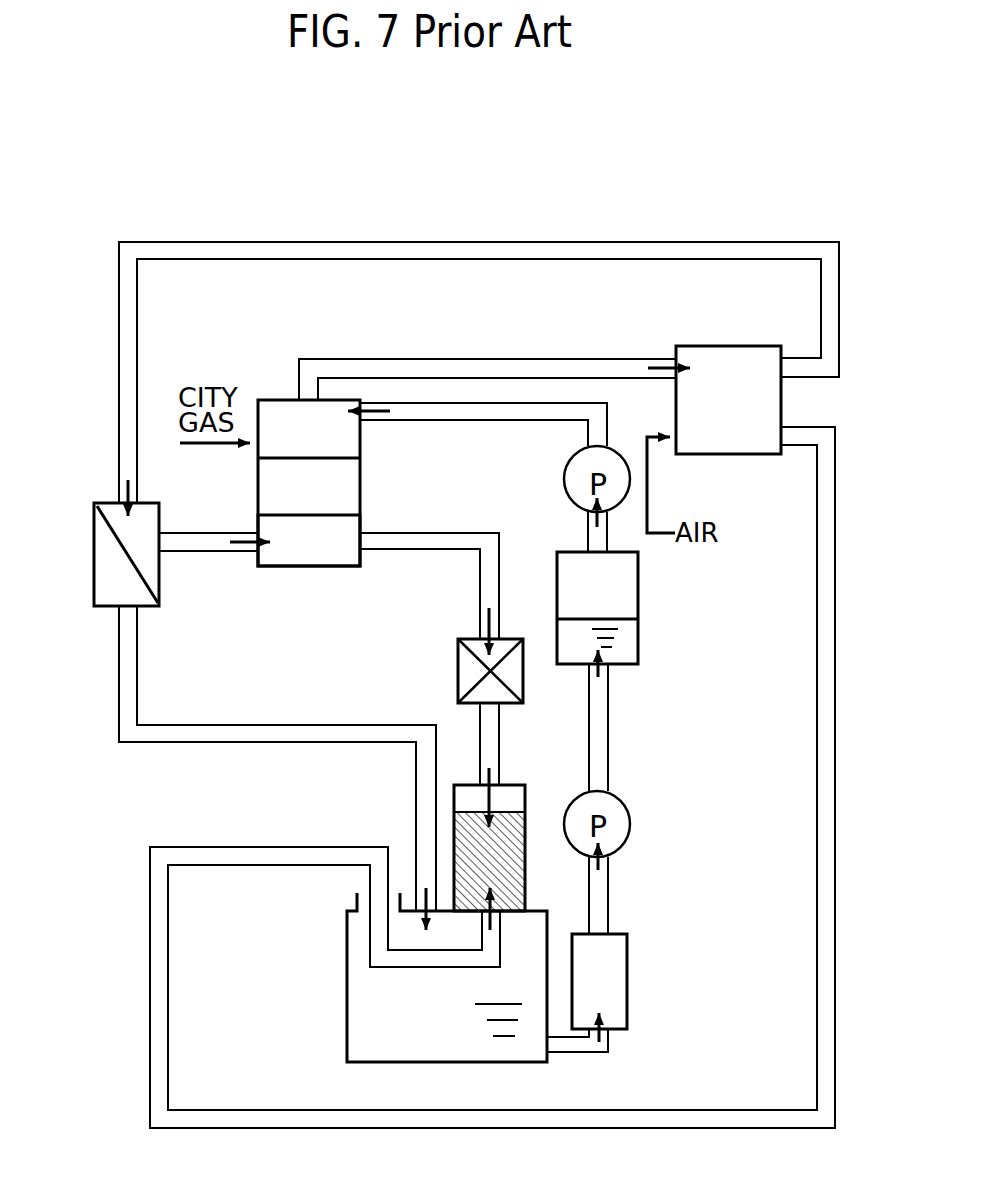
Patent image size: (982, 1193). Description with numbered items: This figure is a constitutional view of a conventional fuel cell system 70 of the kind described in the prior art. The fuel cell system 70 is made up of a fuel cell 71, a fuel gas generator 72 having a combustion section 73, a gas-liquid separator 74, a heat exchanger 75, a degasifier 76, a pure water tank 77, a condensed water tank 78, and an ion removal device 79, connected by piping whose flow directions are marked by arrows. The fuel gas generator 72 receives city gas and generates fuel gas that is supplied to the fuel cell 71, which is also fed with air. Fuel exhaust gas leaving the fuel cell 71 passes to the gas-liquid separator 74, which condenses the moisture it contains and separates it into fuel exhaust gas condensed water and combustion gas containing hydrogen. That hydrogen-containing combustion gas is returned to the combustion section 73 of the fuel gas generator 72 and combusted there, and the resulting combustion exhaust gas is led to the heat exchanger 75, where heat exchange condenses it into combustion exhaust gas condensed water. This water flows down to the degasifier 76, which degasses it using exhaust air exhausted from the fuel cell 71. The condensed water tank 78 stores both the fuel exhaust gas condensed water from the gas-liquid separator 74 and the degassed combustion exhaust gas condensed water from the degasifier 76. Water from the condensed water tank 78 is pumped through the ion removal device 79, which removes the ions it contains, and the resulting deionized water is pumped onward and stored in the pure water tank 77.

The fuel cell system 70 is at (99, 246).
The fuel cell 71 is at (768, 413).
The fuel gas generator 72 is at (277, 393).
The combustion section 73 is at (290, 560).
The gas-liquid separator 74 is at (107, 597).
The heat exchanger 75 is at (512, 638).
The degasifier 76 is at (511, 793).
The pure water tank 77 is at (631, 597).
The condensed water tank 78 is at (372, 1023).
The ion removal device 79 is at (618, 994).